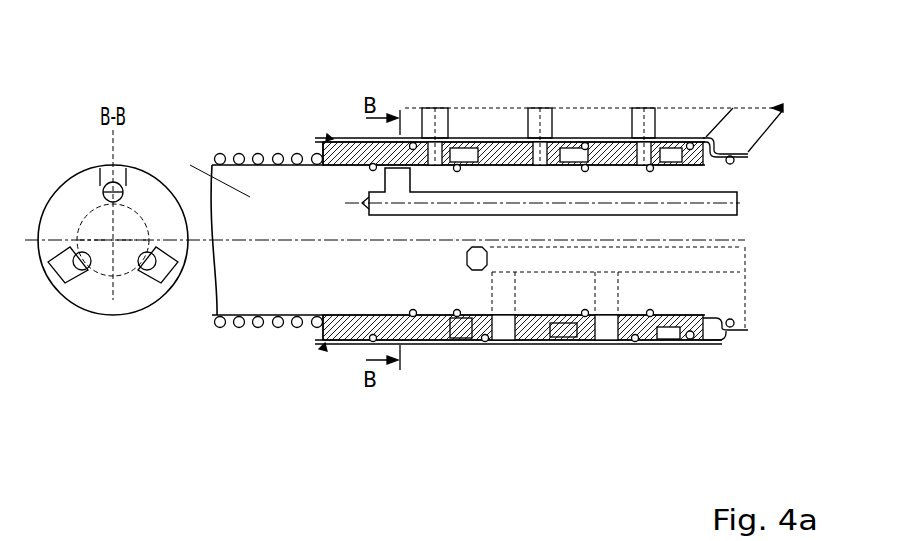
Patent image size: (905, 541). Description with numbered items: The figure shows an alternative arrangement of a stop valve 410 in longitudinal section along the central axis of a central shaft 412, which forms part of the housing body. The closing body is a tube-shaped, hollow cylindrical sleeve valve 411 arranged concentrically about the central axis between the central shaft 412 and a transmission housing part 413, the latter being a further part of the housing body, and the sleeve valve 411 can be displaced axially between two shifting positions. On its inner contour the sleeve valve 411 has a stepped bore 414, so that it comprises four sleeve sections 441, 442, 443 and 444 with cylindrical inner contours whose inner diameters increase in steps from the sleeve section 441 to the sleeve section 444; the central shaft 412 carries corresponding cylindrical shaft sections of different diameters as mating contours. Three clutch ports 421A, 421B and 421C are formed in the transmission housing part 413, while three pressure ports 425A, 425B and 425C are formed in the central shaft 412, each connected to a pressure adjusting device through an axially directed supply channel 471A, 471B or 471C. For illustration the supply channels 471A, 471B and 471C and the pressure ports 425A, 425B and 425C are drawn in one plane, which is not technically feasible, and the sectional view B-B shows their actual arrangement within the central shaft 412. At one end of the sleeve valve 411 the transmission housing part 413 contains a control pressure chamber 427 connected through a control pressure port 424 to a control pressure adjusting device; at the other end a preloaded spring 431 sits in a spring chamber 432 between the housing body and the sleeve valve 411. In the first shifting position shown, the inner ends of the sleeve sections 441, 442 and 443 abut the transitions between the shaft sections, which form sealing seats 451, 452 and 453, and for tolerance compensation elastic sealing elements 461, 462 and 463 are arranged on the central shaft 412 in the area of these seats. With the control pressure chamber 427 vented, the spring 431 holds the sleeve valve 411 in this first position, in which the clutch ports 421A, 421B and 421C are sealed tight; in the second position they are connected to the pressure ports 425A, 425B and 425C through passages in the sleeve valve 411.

The stop valve 410 is at (322, 345).
The sleeve valve 411 is at (330, 137).
The central shaft 412 is at (200, 177).
The transmission housing part 413 is at (482, 135).
The stepped bore 414 is at (262, 153).
The clutch port 421A is at (425, 108).
The clutch port 421B is at (547, 108).
The clutch port 421C is at (648, 108).
The control pressure port 424 is at (748, 118).
The pressure port 425A is at (340, 242).
The pressure port 425B is at (50, 280).
The pressure port 425C is at (157, 267).
The control pressure chamber 427 is at (735, 158).
The spring 431 is at (212, 165).
The spring chamber 432 is at (217, 315).
The sleeve section 441 is at (338, 345).
The sleeve section 442 is at (498, 345).
The sleeve section 443 is at (618, 345).
The sleeve section 444 is at (722, 345).
The sealing seat 451 is at (430, 345).
The sealing seat 452 is at (545, 345).
The sealing seat 453 is at (640, 345).
The sealing element 461 is at (468, 135).
The sealing element 462 is at (590, 135).
The sealing element 463 is at (655, 160).
The supply channel 471A is at (98, 178).
The supply channel 471B is at (93, 262).
The supply channel 471C is at (135, 262).